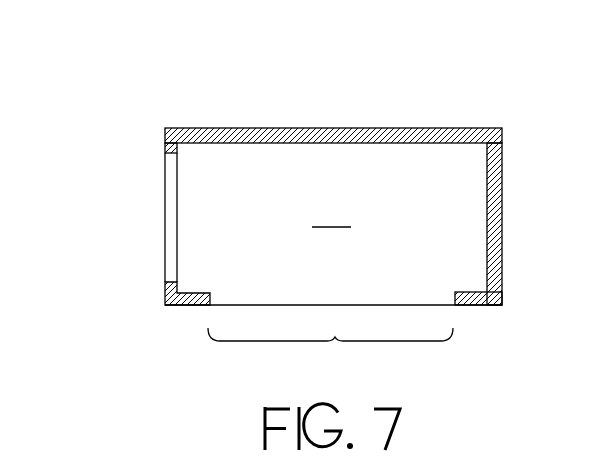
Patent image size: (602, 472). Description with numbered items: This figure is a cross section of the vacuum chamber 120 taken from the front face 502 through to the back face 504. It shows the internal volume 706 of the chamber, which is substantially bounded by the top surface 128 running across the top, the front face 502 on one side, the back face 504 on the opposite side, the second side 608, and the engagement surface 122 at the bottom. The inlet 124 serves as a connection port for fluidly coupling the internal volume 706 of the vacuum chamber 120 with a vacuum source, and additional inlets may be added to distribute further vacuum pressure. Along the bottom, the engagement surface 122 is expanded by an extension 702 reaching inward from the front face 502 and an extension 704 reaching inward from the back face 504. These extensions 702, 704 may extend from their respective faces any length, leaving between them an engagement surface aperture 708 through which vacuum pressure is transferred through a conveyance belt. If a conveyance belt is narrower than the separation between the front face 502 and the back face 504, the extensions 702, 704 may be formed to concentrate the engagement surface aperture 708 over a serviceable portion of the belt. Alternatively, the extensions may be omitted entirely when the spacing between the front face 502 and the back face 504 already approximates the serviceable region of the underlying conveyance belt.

The vacuum chamber 120 is at (150, 87).
The engagement surface 122 is at (187, 306).
The inlet 124 is at (157, 217).
The top surface 128 is at (338, 128).
The front face 502 is at (166, 142).
The back face 504 is at (502, 214).
The second side 608 is at (331, 214).
The extension 702 is at (186, 292).
The extension 704 is at (472, 292).
The internal volume 706 is at (418, 208).
The engagement surface aperture 708 is at (330, 353).